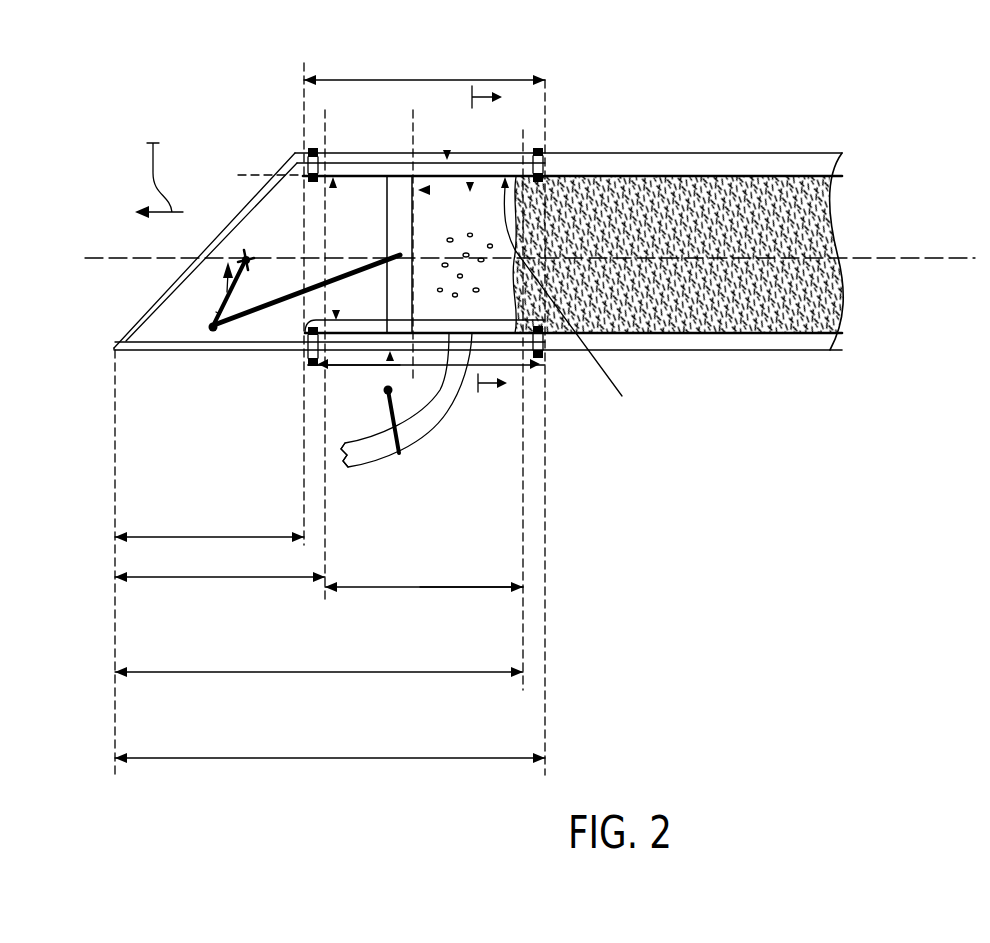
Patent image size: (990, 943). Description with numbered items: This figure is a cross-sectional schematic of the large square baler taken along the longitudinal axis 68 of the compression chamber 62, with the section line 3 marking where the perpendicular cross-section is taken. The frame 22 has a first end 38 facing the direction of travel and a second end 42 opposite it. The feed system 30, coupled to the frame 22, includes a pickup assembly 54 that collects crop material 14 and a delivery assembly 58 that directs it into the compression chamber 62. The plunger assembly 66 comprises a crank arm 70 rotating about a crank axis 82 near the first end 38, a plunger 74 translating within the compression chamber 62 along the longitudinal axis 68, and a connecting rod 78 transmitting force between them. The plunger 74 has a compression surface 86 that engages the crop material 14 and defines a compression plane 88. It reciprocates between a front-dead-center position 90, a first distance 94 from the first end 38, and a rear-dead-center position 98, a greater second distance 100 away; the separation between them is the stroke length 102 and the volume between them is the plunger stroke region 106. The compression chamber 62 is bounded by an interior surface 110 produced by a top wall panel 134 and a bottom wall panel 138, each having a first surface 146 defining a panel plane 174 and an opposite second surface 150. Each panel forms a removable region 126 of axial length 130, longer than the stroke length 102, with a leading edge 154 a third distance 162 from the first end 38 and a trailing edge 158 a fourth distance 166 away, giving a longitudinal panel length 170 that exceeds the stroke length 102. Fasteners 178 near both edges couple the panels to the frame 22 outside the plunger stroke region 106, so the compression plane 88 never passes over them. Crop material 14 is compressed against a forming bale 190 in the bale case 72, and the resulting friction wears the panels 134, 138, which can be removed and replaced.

The section line 3- 3 is at (494, 242).
The crop material 14 is at (453, 207).
The frame 22 is at (260, 200).
The feed system 30 is at (415, 437).
The first end 38 is at (114, 348).
The second end 42 is at (832, 349).
The pickup assembly 54 is at (355, 470).
The delivery assembly 58 is at (397, 455).
The compression chamber 62 is at (470, 182).
The plunger assembly 66 is at (217, 313).
The longitudinal axis 68 is at (915, 258).
The crank arm 70 is at (213, 328).
The bale case 72 is at (713, 165).
The plunger 74 is at (333, 187).
The connecting rod 78 is at (245, 267).
The crank axis 82 is at (228, 258).
The compression surface 86 is at (428, 190).
The compression plane 88 is at (413, 110).
The front-dead-center position 90 is at (325, 110).
The first distance 94 is at (203, 590).
The rear-dead-center position 98 is at (523, 130).
The second distance 100 is at (262, 665).
The stroke length 102 is at (372, 595).
The plunger stroke region 106 is at (425, 595).
The interior surface 110 is at (573, 302).
The removable region 126 is at (476, 322).
The axial length 130 is at (337, 366).
The top wall panel 134 is at (363, 163).
The bottom wall panel 138 is at (475, 368).
The first surface 146 is at (242, 373).
The second surface 150 is at (450, 465).
The leading edge 154 is at (303, 338).
The trailing edge 158 is at (548, 362).
The third distance 162 is at (188, 525).
The fourth distance 166 is at (280, 748).
The longitudinal panel length 170 is at (428, 78).
The panel plane 174 is at (290, 183).
The fastener 178 is at (543, 352).
The forming bale 190 is at (623, 200).